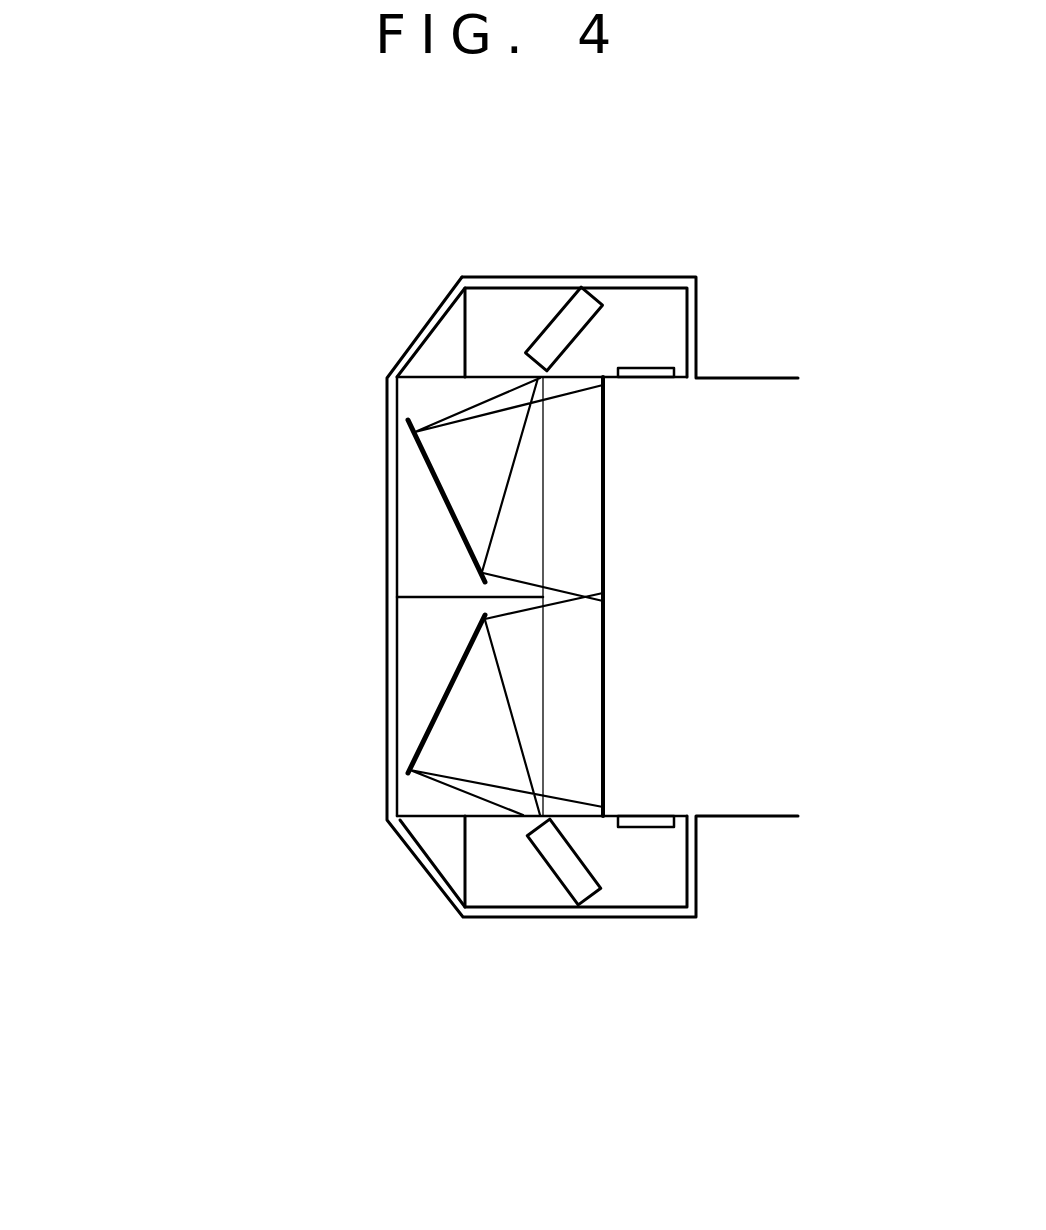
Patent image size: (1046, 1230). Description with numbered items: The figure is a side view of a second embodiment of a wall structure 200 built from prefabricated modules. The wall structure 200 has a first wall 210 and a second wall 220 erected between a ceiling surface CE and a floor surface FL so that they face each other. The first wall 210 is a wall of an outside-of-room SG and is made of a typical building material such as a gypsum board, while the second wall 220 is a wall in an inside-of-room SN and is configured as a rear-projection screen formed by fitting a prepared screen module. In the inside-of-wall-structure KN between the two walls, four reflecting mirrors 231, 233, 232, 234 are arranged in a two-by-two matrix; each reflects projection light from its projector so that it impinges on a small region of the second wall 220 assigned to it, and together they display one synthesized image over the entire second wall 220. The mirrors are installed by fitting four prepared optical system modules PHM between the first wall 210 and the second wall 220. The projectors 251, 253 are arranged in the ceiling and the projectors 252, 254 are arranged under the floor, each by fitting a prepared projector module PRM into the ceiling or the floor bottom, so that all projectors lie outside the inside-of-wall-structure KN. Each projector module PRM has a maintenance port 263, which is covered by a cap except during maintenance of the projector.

The wall structure 200 is at (217, 305).
The first wall 210 is at (387, 763).
The second wall 220 is at (605, 655).
The reflecting mirror 231 is at (281, 463).
The reflecting mirror 233 is at (427, 462).
The reflecting mirror 232 is at (270, 694).
The reflecting mirror 234 is at (450, 678).
The projector 251 is at (732, 284).
The projector 253 is at (597, 322).
The projector 252 is at (657, 927).
The projector 254 is at (597, 864).
The maintenance port 263 is at (655, 377).
The optical system module PHM is at (430, 377).
The projector module PRM is at (517, 282).
The inside-of-wall-structure KN is at (437, 521).
The outside-of-room SG is at (271, 567).
The inside-of-room SN is at (809, 567).
The ceiling surface CE is at (777, 378).
The floor surface FL is at (770, 817).